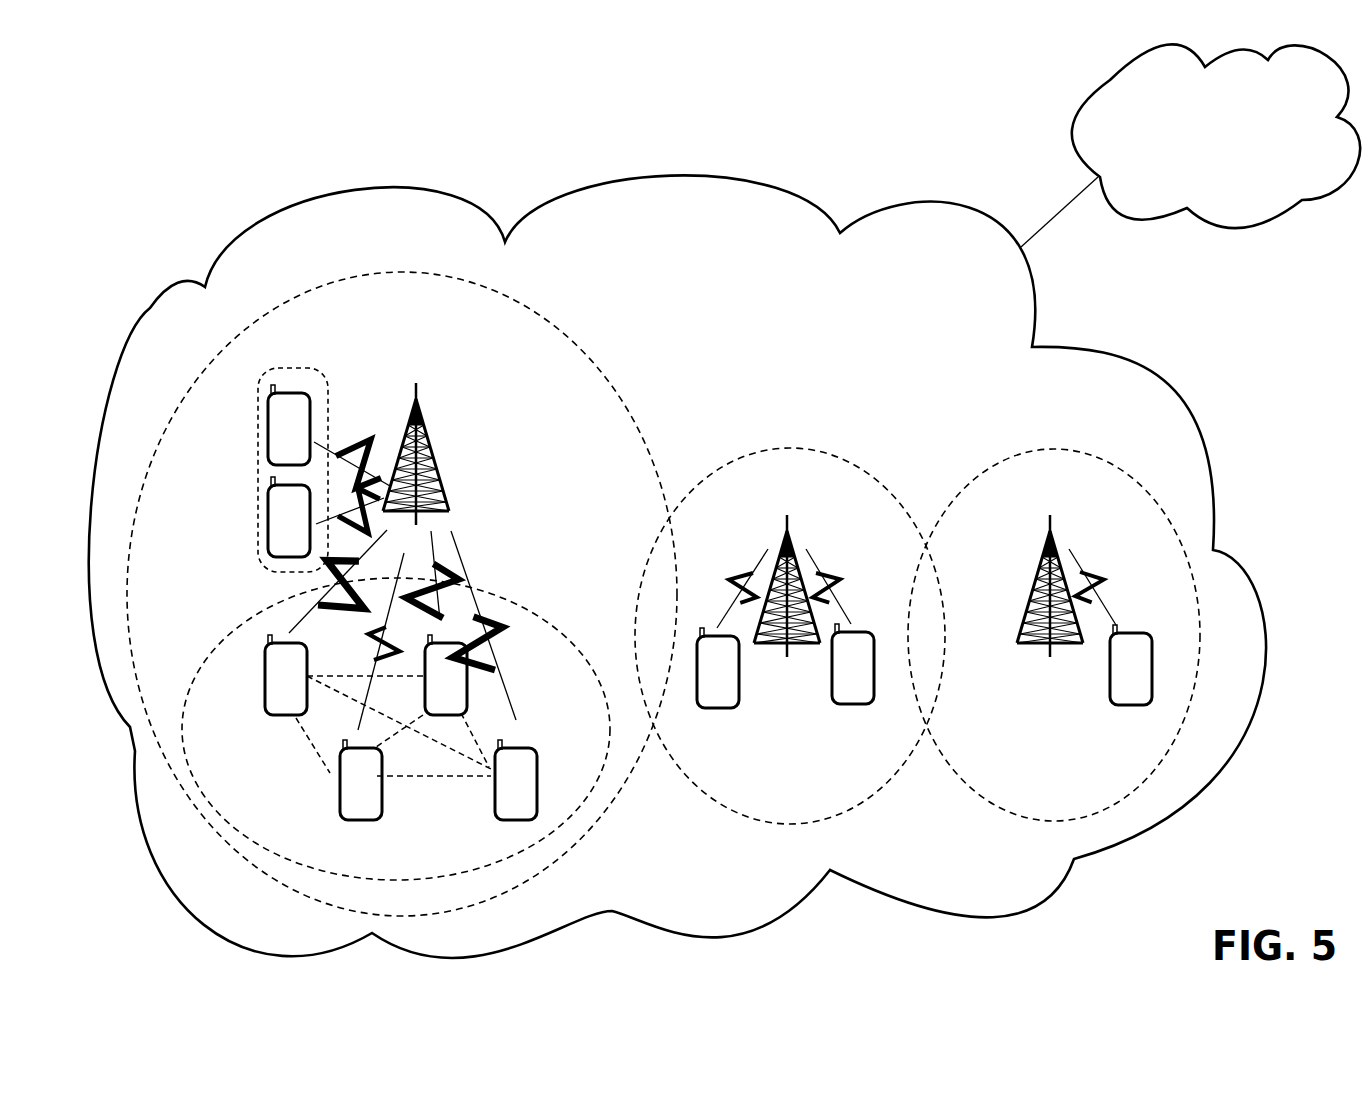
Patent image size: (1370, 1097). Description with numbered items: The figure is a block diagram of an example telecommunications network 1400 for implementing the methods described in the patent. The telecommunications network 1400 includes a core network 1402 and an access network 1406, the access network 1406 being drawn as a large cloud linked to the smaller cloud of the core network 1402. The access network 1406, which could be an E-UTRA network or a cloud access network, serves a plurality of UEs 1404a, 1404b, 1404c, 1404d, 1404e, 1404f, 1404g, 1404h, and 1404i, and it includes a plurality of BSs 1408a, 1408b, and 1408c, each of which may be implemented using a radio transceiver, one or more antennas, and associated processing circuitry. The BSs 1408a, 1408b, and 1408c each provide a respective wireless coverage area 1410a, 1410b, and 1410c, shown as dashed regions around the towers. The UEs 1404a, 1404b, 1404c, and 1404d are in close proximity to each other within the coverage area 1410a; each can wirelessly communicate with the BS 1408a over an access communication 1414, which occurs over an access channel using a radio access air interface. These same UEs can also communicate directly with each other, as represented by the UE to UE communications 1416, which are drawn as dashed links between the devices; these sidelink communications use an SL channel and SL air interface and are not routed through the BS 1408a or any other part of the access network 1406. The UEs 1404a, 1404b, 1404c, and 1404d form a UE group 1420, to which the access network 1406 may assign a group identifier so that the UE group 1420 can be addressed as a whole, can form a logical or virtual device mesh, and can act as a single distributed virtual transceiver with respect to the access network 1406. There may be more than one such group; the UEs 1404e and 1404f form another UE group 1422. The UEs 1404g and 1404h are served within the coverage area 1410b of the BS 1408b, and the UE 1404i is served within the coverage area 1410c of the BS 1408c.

The telecommunications network 1400 is at (242, 124).
The core network 1402 is at (1240, 159).
The UE 1404a is at (263, 690).
The UE 1404b is at (338, 797).
The UE 1404c is at (537, 770).
The UE 1404d is at (468, 680).
The UE 1404e is at (266, 522).
The UE 1404f is at (266, 443).
The UE 1404g is at (718, 709).
The UE 1404h is at (851, 705).
The UE 1404i is at (1130, 706).
The access network 1406 is at (600, 182).
The BS 1408a is at (421, 402).
The BS 1408b is at (784, 534).
The BS 1408c is at (1053, 537).
The wireless coverage area 1410a is at (345, 272).
The wireless coverage area 1410b is at (746, 449).
The wireless coverage area 1410c is at (1011, 449).
The access communication 1414 is at (310, 609).
The UE to UE communications 1416 is at (436, 798).
The UE group 1420 is at (532, 613).
The UE group 1422 is at (329, 379).